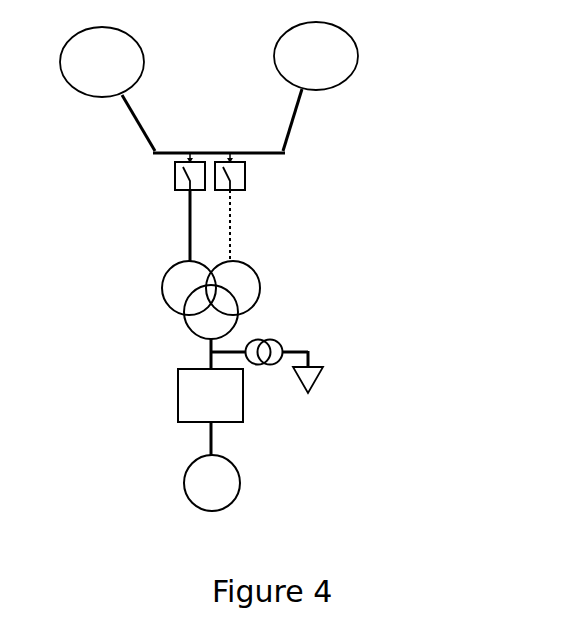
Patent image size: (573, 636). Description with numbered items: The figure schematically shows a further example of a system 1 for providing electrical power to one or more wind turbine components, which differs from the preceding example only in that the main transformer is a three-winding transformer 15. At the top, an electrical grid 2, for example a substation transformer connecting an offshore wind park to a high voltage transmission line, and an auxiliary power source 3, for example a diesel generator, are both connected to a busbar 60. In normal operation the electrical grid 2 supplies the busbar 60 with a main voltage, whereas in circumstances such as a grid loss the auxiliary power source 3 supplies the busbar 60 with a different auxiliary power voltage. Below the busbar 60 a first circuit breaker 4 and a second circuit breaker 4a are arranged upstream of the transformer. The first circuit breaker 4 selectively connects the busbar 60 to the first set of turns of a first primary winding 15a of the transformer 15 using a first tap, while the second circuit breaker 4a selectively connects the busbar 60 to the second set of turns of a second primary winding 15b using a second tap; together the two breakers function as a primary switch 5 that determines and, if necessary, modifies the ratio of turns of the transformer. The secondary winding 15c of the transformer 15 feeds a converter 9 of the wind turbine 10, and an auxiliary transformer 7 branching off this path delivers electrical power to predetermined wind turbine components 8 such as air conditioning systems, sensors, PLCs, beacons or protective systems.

The system 1 is at (362, 192).
The electrical grid 2 is at (115, 28).
The auxiliary power source 3 is at (350, 33).
The busbar 60 is at (203, 152).
The first circuit breaker 4 is at (173, 185).
The second circuit breaker 4a is at (257, 188).
The primary switch 5 is at (180, 223).
The three-winding transformer 15 is at (199, 317).
The first primary winding 15a is at (153, 290).
The second primary winding 15b is at (263, 262).
The secondary winding 15c is at (200, 337).
The auxiliary transformer 7 is at (273, 327).
The wind turbine components 8 is at (328, 390).
The converter 9 is at (170, 402).
The wind turbine 10 is at (181, 490).